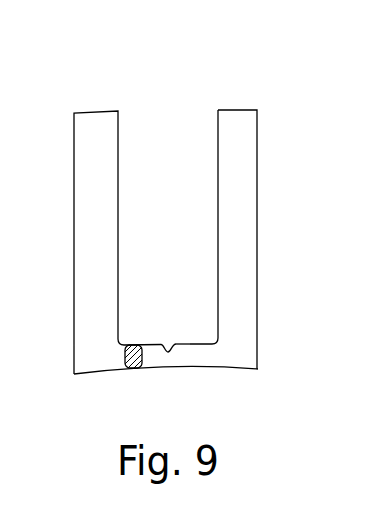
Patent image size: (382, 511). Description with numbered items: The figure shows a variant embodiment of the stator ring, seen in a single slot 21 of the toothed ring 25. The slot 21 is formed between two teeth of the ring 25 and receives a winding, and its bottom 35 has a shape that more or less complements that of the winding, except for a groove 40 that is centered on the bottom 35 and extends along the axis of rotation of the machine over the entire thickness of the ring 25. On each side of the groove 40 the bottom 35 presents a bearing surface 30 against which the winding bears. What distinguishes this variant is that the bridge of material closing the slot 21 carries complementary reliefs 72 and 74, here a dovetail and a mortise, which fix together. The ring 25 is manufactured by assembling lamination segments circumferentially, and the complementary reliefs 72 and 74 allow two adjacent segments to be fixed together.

The slot 21 is at (168, 140).
The toothed ring 25 is at (234, 140).
The bearing surface 30 is at (190, 343).
The bottom of the slot 35 is at (179, 343).
The groove 40 is at (168, 352).
The complementary relief 72 is at (127, 344).
The complementary relief 74 is at (135, 344).